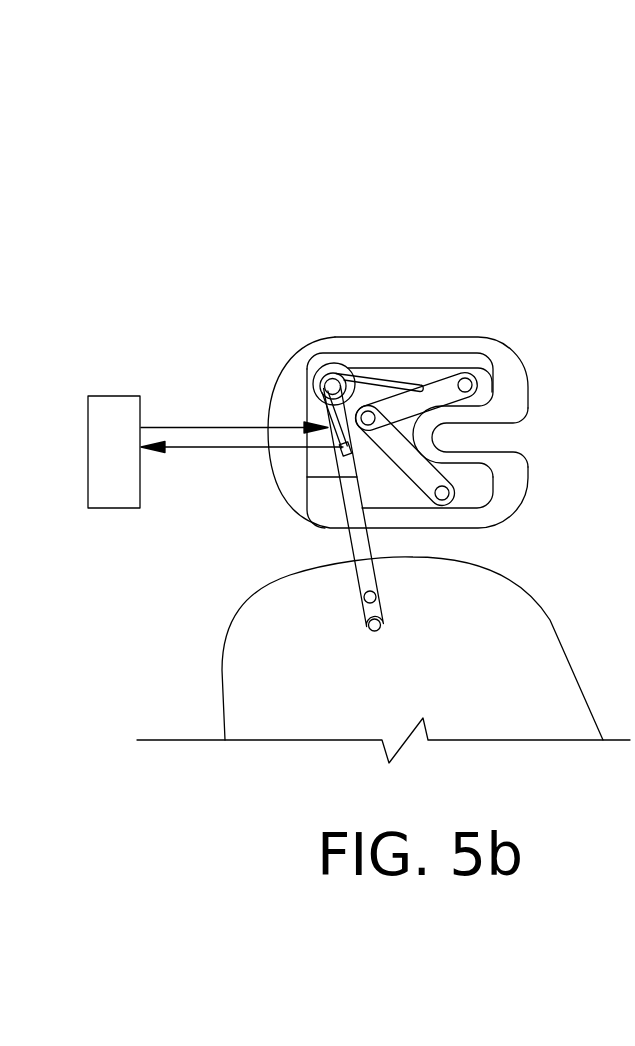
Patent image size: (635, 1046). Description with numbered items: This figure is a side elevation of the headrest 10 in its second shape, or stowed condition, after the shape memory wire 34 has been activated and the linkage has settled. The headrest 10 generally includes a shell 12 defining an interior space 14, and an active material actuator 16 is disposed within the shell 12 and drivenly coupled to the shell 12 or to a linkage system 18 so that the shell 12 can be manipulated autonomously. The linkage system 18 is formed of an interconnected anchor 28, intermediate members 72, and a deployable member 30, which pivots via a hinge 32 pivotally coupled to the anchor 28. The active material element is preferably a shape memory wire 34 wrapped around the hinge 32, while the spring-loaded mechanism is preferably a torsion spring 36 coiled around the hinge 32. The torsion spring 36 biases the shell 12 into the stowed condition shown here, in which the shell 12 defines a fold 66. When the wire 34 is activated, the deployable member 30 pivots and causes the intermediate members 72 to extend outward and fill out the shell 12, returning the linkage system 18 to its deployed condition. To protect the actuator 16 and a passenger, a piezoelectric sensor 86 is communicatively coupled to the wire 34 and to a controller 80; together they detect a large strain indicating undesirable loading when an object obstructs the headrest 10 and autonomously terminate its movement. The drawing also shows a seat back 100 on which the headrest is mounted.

The headrest 10 is at (461, 294).
The shell 12 is at (313, 343).
The interior space 14 is at (462, 517).
The active material actuator 16 is at (424, 366).
The linkage system 18 is at (455, 471).
The anchor 28 is at (375, 546).
The deployable member 30 is at (380, 368).
The hinge 32 is at (307, 368).
The shape memory wire 34 is at (321, 404).
The torsion spring 36 is at (317, 381).
The fold 66 is at (433, 438).
The intermediate members 72 is at (478, 394).
The controller 80 is at (97, 461).
The piezoelectric sensor 86 is at (340, 452).
The seat back 100 is at (273, 584).